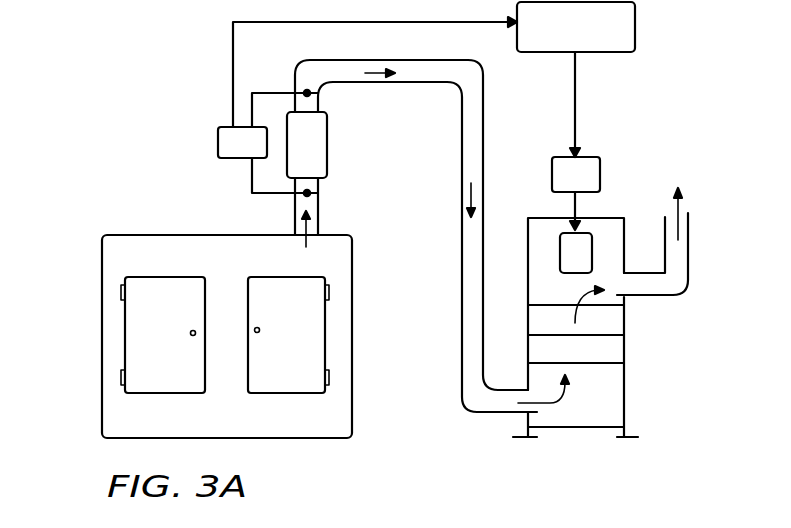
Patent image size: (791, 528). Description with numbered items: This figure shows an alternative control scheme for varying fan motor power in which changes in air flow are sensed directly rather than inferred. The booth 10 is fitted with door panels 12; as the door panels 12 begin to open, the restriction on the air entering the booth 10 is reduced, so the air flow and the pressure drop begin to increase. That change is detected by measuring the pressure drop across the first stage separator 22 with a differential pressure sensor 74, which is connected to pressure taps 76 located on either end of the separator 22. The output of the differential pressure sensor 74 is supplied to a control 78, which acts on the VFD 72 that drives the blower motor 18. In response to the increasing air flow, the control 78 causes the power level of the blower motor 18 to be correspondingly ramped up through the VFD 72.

The booth 10 is at (96, 367).
The door panels 12 is at (152, 283).
The blower motor 18 is at (590, 240).
The first stage separator 22 is at (328, 144).
The VFD 72 is at (600, 158).
The differential pressure sensor 74 is at (217, 137).
The pressure taps 76 is at (318, 94).
The control 78 is at (636, 33).